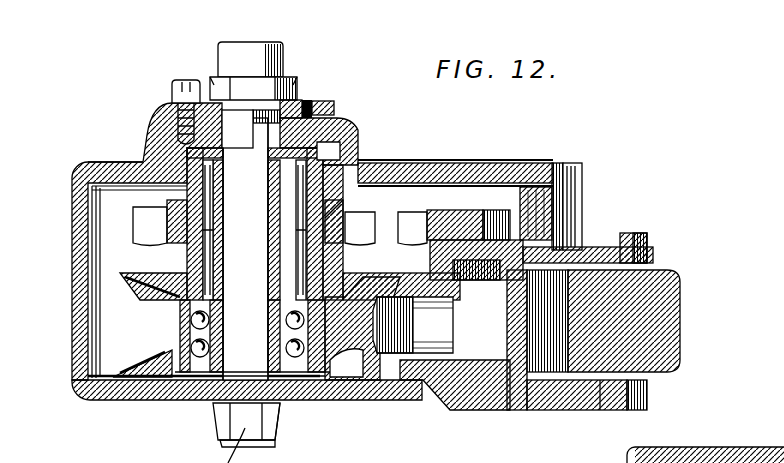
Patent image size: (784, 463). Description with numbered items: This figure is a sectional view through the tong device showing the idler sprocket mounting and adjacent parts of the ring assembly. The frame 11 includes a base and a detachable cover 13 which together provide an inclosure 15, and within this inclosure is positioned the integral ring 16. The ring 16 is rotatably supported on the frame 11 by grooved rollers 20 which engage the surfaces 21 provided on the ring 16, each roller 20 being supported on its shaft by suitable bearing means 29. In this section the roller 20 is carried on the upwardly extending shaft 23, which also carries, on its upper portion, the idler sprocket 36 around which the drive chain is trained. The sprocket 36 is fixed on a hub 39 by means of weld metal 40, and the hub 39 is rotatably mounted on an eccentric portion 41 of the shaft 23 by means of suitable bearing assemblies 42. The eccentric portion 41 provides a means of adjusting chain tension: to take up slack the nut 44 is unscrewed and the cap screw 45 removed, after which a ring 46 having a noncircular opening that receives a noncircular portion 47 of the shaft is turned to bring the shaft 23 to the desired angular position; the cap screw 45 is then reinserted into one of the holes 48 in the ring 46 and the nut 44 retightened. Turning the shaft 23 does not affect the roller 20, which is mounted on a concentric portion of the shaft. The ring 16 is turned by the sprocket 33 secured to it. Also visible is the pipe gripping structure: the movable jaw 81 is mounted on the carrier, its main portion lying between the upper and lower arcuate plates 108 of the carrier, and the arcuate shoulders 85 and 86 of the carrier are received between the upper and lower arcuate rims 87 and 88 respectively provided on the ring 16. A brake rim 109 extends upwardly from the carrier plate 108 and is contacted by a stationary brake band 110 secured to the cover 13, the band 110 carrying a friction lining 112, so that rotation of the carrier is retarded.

The frame 11 is at (70, 236).
The detachable cover 13 is at (63, 184).
The inclosure 15 is at (108, 248).
The integral ring 16 is at (470, 417).
The grooved rollers 20 is at (143, 337).
The surfaces 21 is at (376, 280).
The shaft 23 is at (214, 408).
The bearing means 29 is at (227, 303).
The sprocket 33 is at (413, 217).
The idler sprocket 36 is at (360, 217).
The hub 39 is at (185, 262).
The weld metal 40 is at (185, 208).
The eccentric portion 41 is at (251, 245).
The bearing assemblies 42 is at (362, 160).
The nut 44 is at (250, 52).
The cap screw 45 is at (183, 80).
The ring 46 is at (300, 103).
The noncircular portion 47 is at (268, 105).
The holes 48 is at (330, 105).
The movable jaw 81 is at (660, 306).
The arcuate shoulder 85 is at (507, 410).
The arcuate shoulder 86 is at (557, 248).
The upper arcuate rim 87 is at (503, 360).
The lower arcuate rim 88 is at (518, 262).
The arcuate plates 108 is at (642, 251).
The brake rim 109 is at (562, 207).
The brake band 110 is at (521, 198).
The friction lining 112 is at (540, 200).